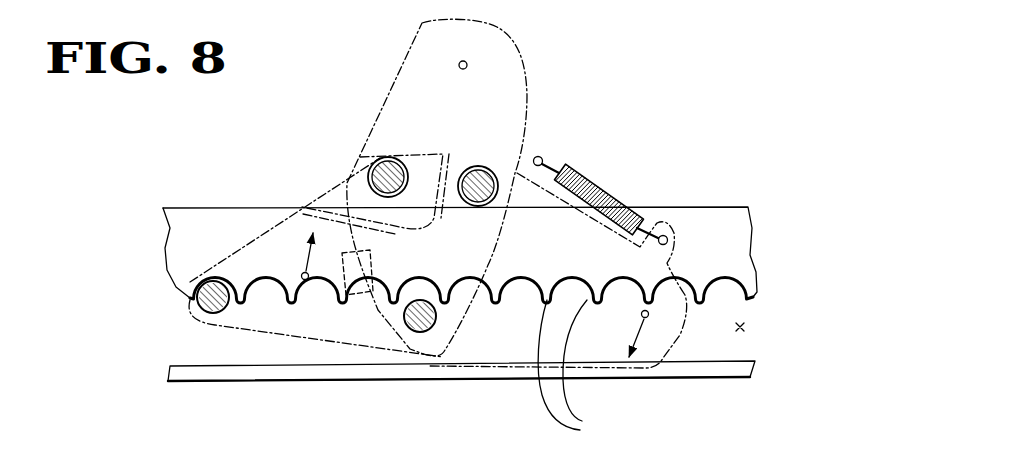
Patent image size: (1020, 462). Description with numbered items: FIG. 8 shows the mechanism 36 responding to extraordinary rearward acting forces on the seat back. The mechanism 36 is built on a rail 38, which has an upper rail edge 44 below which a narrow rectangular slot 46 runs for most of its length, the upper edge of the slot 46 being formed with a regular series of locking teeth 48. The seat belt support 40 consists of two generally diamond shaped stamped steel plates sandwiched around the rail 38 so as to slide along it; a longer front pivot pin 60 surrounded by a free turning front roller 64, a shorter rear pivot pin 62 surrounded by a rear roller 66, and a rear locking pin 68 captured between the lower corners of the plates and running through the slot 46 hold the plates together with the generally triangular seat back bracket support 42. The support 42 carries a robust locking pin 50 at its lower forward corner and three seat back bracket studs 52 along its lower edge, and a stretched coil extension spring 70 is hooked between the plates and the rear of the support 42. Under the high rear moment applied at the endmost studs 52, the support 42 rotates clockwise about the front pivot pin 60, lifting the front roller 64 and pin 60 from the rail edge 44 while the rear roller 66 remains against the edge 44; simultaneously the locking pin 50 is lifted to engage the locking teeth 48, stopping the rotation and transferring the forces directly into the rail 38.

The mechanism 36 is at (698, 84).
The rail 38 is at (760, 237).
The seat belt support 40 is at (493, 51).
The seat back bracket support 42 is at (327, 349).
The rail upper edge 44 is at (700, 207).
The slot 46 is at (745, 327).
The locking teeth 48 is at (576, 369).
The locking pin 50 is at (221, 311).
The seat back bracket studs 52 is at (304, 272).
The front pivot pin 60 is at (387, 157).
The rear pivot pin 62 is at (491, 171).
The front roller 64 is at (369, 181).
The rear roller 66 is at (468, 168).
The rear locking pin 68 is at (425, 331).
The coil extension spring 70 is at (607, 192).